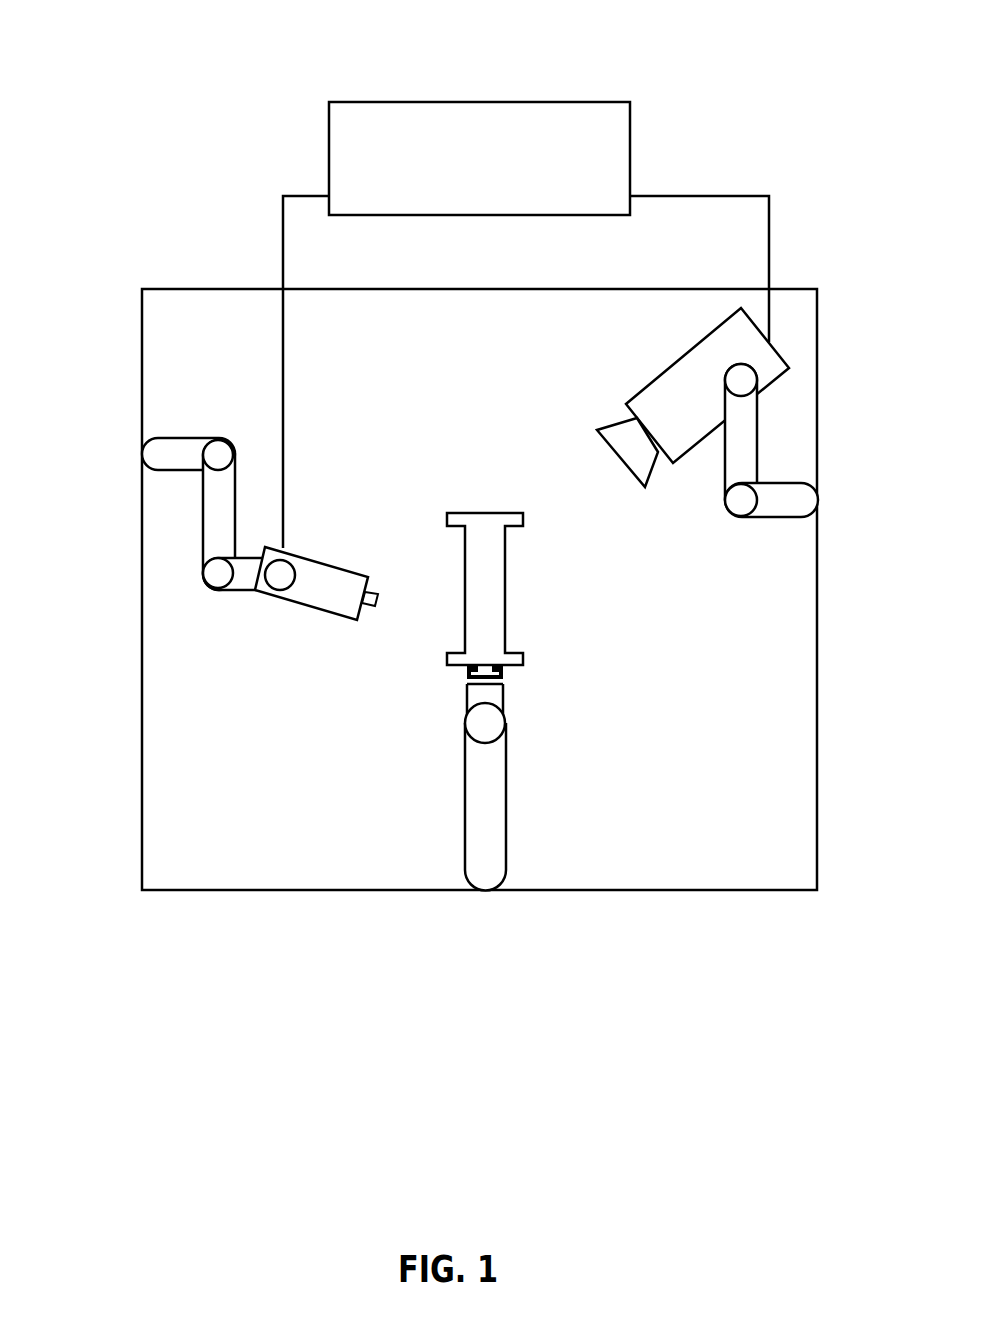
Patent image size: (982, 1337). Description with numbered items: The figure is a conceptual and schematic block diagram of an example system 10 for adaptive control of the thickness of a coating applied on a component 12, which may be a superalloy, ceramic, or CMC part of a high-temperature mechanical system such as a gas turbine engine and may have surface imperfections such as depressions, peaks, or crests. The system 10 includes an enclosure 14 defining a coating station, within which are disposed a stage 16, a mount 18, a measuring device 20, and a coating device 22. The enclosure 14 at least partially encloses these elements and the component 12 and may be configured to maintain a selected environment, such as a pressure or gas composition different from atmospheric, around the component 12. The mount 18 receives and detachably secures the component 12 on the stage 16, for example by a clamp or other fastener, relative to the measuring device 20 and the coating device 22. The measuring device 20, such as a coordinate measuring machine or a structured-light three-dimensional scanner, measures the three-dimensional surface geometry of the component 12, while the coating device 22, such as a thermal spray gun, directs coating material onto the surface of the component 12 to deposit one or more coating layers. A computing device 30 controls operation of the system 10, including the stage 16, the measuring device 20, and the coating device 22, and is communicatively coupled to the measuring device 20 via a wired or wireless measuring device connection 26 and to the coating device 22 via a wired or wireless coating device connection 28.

The system 10 is at (100, 58).
The component 12 is at (459, 495).
The enclosure 14 is at (818, 422).
The stage 16 is at (506, 790).
The mount 18 is at (502, 677).
The measuring device 20 is at (790, 353).
The coating device 22 is at (297, 602).
The measuring device connection 26 is at (769, 242).
The coating device connection 28 is at (283, 242).
The computing device 30 is at (494, 184).